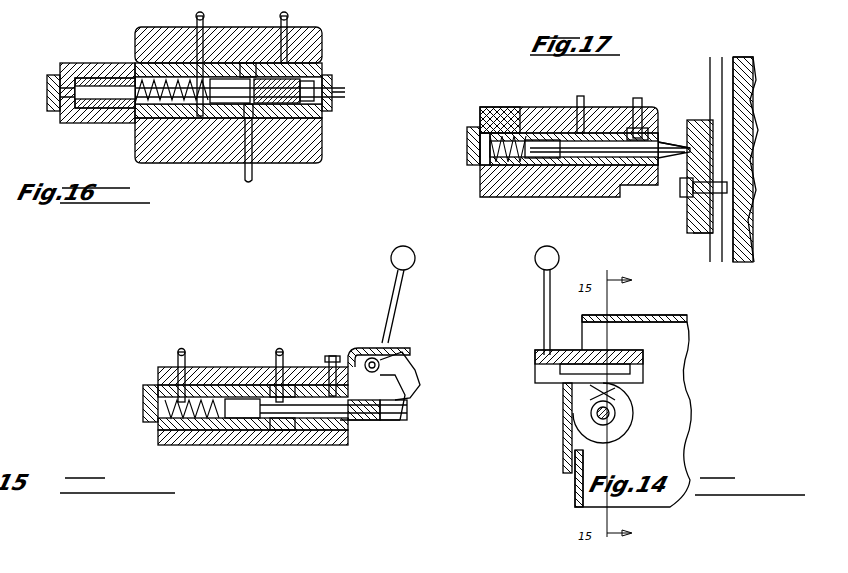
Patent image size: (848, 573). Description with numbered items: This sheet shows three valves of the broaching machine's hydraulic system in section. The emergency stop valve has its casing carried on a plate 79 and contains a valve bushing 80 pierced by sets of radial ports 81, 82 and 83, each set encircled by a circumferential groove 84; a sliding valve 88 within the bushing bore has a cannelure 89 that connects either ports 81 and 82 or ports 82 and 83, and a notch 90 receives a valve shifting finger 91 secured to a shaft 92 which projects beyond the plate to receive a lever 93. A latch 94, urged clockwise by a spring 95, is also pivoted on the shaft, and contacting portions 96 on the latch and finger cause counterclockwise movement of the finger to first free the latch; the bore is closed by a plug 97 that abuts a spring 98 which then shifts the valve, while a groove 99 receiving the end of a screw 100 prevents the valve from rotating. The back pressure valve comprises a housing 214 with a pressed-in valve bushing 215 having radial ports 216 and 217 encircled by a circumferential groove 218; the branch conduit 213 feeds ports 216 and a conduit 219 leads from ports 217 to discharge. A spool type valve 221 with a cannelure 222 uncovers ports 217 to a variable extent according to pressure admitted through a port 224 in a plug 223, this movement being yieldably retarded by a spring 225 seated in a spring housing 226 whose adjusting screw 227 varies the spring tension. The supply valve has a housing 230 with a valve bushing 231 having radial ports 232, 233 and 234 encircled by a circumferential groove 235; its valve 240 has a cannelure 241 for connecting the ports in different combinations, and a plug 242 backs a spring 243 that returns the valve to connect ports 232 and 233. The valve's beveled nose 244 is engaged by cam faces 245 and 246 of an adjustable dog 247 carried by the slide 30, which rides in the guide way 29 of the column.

In FIG. 16, the branch conduit 213 is at (287, 18).
In FIG. 16, the housing 214 is at (325, 52).
In FIG. 16, the valve bushing 215 is at (322, 68).
In FIG. 16, the radial ports 216 is at (310, 160).
In FIG. 16, the radial ports 217 is at (232, 190).
In FIG. 16, the circumferential groove 218 is at (262, 160).
In FIG. 16, the conduit 219 is at (245, 165).
In FIG. 16, the spool type valve 221 is at (322, 130).
In FIG. 16, the cannelure 222 is at (275, 163).
In FIG. 16, the plug 223 is at (300, 100).
In FIG. 16, the port 224 is at (332, 80).
In FIG. 16, the spring 225 is at (100, 123).
In FIG. 16, the spring housing 226 is at (125, 77).
In FIG. 16, the adjusting screw 227 is at (55, 111).
In FIG. 17, the housing 230 is at (580, 100).
In FIG. 17, the valve bushing 231 is at (480, 112).
In FIG. 17, the radial ports 232 is at (598, 197).
In FIG. 17, the radial ports 233 is at (560, 197).
In FIG. 17, the radial ports 234 is at (520, 197).
In FIG. 17, the circumferential groove 235 is at (583, 197).
In FIG. 17, the valve 240 is at (645, 138).
In FIG. 17, the cannelure 241 is at (540, 197).
In FIG. 17, the plug 242 is at (470, 150).
In FIG. 17, the spring 243 is at (485, 170).
In FIG. 17, the nose 244 is at (668, 150).
In FIG. 17, the cam face 245 is at (713, 148).
In FIG. 17, the cam face 246 is at (680, 188).
In FIG. 17, the adjustable dog 247 is at (700, 230).
In FIG. 17, the slide 30 is at (757, 85).
In FIG. 15, the valve bushing 80 is at (365, 420).
In FIG. 15, the radial ports 81 is at (232, 367).
In FIG. 15, the radial ports 82 is at (270, 378).
In FIG. 15, the radial ports 83 is at (300, 385).
In FIG. 15, the circumferential groove 84 is at (290, 382).
In FIG. 15, the sliding valve 88 is at (407, 415).
In FIG. 14, the sliding valve 88 is at (595, 420).
In FIG. 15, the cannelure 89 is at (245, 430).
In FIG. 15, the notch 90 is at (385, 420).
In FIG. 15, the valve shifting finger 91 is at (320, 432).
In FIG. 14, the valve shifting finger 91 is at (598, 411).
In FIG. 15, the shaft 92 is at (390, 355).
In FIG. 15, the lever 93 is at (395, 300).
In FIG. 14, the lever 93 is at (544, 303).
In FIG. 15, the latch 94 is at (405, 385).
In FIG. 14, the latch 94 is at (615, 398).
In FIG. 15, the spring 95 is at (385, 365).
In FIG. 15, the contacting portions 96 is at (415, 370).
In FIG. 15, the plug 97 is at (143, 405).
In FIG. 15, the spring 98 is at (196, 380).
In FIG. 14, the spring 98 is at (630, 425).
In FIG. 15, the groove 99 is at (300, 430).
In FIG. 15, the screw 100 is at (335, 365).
In FIG. 14, the guide way 29 is at (680, 308).
In FIG. 14, the plate 79 is at (563, 450).